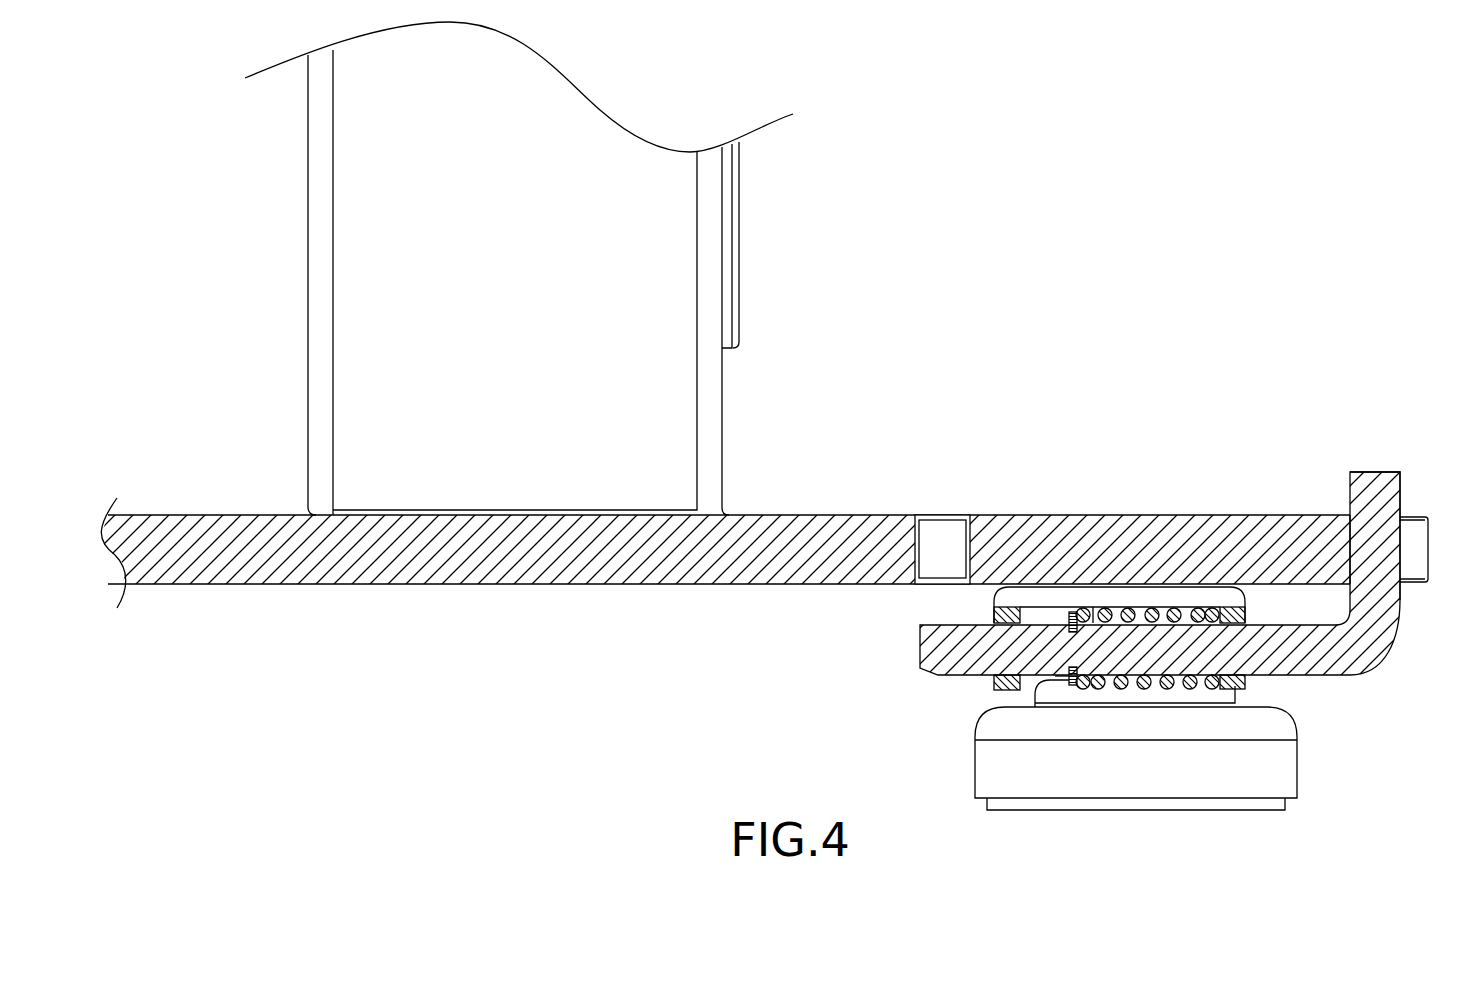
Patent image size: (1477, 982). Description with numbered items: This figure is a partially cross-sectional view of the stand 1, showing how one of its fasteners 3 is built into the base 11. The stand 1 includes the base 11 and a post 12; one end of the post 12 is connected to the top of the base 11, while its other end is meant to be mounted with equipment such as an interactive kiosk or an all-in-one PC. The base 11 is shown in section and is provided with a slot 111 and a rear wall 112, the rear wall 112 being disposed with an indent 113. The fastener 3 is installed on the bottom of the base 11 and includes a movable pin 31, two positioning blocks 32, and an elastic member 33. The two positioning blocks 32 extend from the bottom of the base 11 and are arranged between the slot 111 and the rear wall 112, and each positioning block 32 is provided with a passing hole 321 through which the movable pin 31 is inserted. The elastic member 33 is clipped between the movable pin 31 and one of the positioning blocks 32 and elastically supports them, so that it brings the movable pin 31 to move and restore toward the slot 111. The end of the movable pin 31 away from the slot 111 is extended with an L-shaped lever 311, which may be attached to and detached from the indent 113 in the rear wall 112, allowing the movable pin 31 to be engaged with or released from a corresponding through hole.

The stand 1 is at (491, 268).
The base 11 is at (789, 536).
The slot 111 is at (941, 528).
The rear wall 112 is at (1430, 548).
The indent 113 is at (1368, 540).
The post 12 is at (343, 328).
The fastener 3 is at (1173, 602).
The movable pin 31 is at (1280, 640).
The L-shaped lever 311 is at (1375, 490).
The positioning block 32 is at (1008, 600).
The passing hole 321 is at (990, 656).
The elastic member 33 is at (1152, 607).